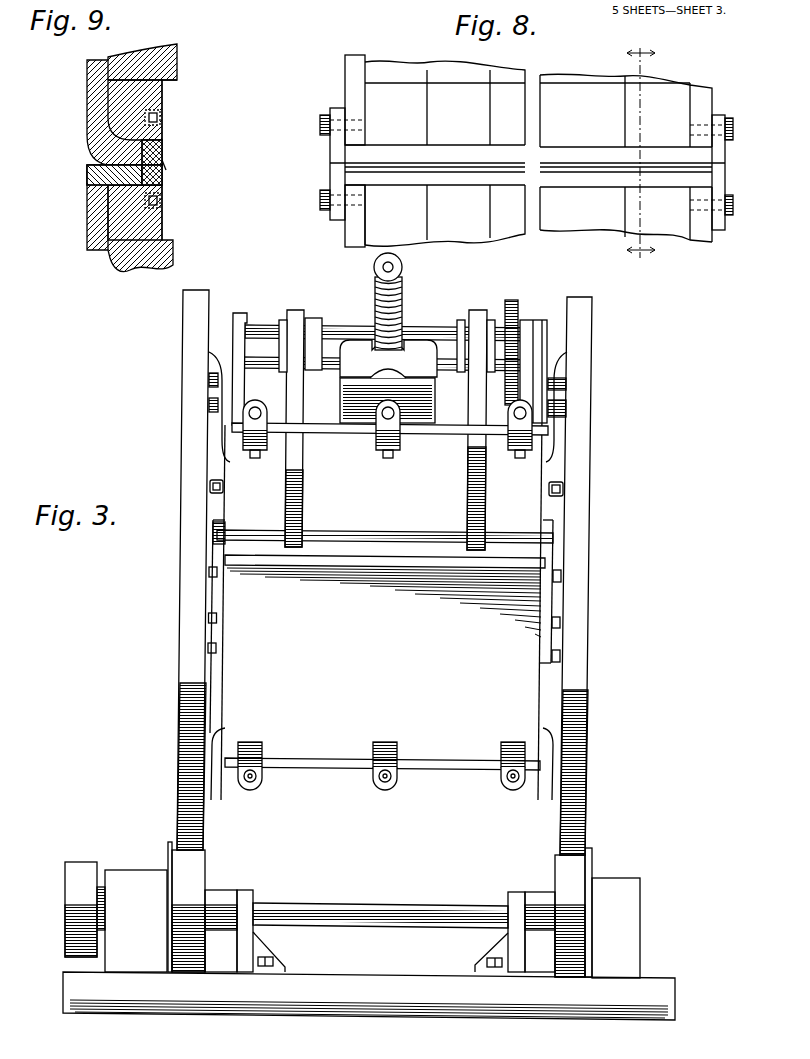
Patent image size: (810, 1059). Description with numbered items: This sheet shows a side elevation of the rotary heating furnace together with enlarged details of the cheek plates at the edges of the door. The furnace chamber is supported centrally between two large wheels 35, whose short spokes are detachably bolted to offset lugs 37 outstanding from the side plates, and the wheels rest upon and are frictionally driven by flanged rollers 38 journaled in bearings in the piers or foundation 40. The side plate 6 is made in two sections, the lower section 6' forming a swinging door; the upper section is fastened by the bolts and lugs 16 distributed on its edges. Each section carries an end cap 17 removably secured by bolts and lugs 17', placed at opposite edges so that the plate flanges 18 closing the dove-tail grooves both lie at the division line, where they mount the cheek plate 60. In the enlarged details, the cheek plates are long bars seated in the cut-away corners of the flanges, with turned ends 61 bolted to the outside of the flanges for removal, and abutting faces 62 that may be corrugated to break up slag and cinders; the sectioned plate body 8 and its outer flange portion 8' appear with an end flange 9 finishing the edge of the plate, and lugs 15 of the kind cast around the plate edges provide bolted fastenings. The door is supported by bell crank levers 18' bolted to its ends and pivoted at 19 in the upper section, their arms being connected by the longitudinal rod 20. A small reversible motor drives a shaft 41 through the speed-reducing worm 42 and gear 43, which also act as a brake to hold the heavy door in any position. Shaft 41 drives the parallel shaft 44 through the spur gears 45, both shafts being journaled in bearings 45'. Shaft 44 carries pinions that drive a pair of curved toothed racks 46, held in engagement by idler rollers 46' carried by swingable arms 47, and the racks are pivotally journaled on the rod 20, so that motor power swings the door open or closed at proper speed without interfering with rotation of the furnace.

In FIG. 9, the side plate 6 is at (115, 104).
In FIG. 3, the side plate 6 is at (408, 560).
In FIG. 9, the swinging door section 6' is at (105, 218).
In FIG. 3, the swinging door section 6' is at (412, 732).
In FIG. 9, the roller sleeve 8 is at (150, 160).
In FIG. 8, the roller sleeve 8 is at (508, 150).
In FIG. 9, the roller flange 8' is at (157, 67).
In FIG. 8, the end flange 9 is at (352, 103).
In FIG. 3, the lugs 15 is at (257, 783).
In FIG. 3, the bolts and lugs 16 is at (210, 483).
In FIG. 3, the end cap 17 is at (386, 571).
In FIG. 3, the bolts and lugs 17' is at (385, 595).
In FIG. 9, the plate flanges 18 is at (92, 164).
In FIG. 3, the bell crank levers 18' is at (376, 551).
In FIG. 3, the hinge pivot 19 is at (213, 528).
In FIG. 3, the longitudinal rod 20 is at (385, 525).
In FIG. 3, the wheels 35 is at (190, 320).
In FIG. 3, the offset lugs 37 is at (222, 415).
In FIG. 3, the flanged rollers 38 is at (193, 878).
In FIG. 3, the piers or foundation 40 is at (145, 950).
In FIG. 3, the shaft 41 is at (340, 329).
In FIG. 3, the worm 42 is at (403, 268).
In FIG. 3, the gear 43 is at (405, 306).
In FIG. 3, the parallel shaft 44 is at (265, 360).
In FIG. 3, the spur gears 45 is at (530, 345).
In FIG. 3, the bearings 45' is at (380, 369).
In FIG. 3, the curved toothed racks 46 is at (386, 430).
In FIG. 3, the idler rollers 46' is at (311, 303).
In FIG. 3, the arms 47 is at (312, 327).
In FIG. 9, the cheek plate 60 is at (163, 145).
In FIG. 8, the cheek plate 60 is at (385, 152).
In FIG. 8, the turned ends 61 is at (335, 135).
In FIG. 9, the abutting faces 62 is at (165, 163).
In FIG. 8, the abutting faces 62 is at (330, 164).